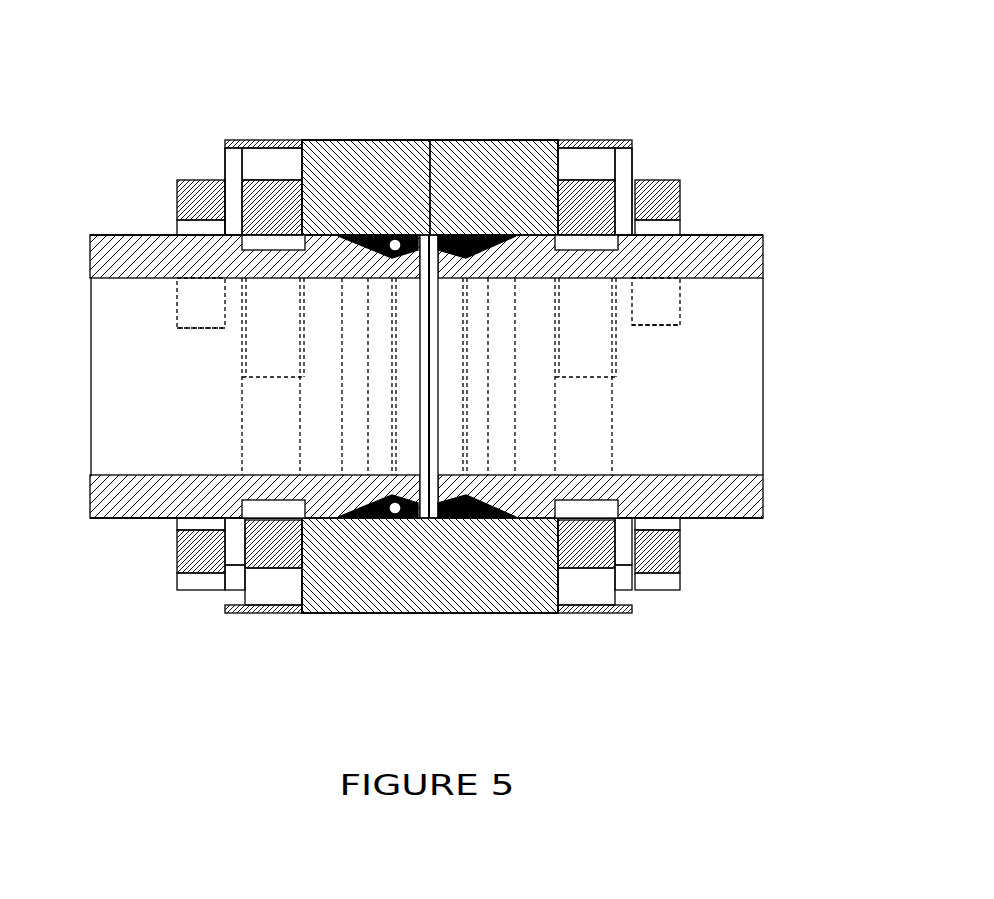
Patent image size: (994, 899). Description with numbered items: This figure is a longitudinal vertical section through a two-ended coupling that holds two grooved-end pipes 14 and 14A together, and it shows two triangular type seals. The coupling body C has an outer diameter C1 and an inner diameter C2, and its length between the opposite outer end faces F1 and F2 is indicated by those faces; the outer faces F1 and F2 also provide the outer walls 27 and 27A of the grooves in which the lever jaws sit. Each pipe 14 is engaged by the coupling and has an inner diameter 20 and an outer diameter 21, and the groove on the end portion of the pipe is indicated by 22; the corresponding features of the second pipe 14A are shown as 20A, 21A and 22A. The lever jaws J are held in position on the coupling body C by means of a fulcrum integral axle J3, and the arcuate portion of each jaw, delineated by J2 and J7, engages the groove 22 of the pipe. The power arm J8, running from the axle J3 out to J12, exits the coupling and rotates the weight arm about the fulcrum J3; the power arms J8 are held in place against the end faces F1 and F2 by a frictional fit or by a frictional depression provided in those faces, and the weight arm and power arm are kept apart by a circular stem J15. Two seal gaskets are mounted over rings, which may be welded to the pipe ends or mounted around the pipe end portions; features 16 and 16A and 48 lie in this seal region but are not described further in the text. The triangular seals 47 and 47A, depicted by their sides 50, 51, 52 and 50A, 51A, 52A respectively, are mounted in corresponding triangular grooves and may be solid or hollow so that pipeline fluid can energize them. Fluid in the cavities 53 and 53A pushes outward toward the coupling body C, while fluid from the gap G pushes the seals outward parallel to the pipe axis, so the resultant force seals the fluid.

The pipe 14 is at (125, 282).
The pipe 14A is at (763, 285).
The joint 16 is at (427, 463).
The joint portion 16A is at (463, 282).
The inner diameter of pipe 20 is at (125, 475).
The lower second plate 20A is at (770, 518).
The outer diameter of pipe 21 is at (140, 235).
The upper surface of second plate 21A is at (748, 235).
The groove 22 is at (290, 475).
The lower surface of second plate 22A is at (620, 475).
The outer wall 27 is at (198, 250).
The outer wall 27A is at (700, 262).
The triangular seal 47 is at (305, 148).
The triangular seal 47A is at (487, 617).
The clamp block edge 48 is at (335, 475).
The seal side 50 is at (332, 280).
The seal side 50A is at (493, 140).
The seal side 51 is at (410, 280).
The seal side 51A is at (528, 148).
The seal side 52 is at (410, 148).
The seal side 52A is at (477, 148).
The cavity 53 is at (360, 280).
The cavity 53A is at (485, 262).
The coupling body C is at (335, 148).
The outer diameter of coupling body C1 is at (372, 148).
The inner diameter of coupling body C2 is at (320, 565).
The outer face F1 is at (225, 152).
The outer face F2 is at (640, 158).
The gap G is at (430, 403).
The lever jaw J is at (262, 148).
The lever end J2 is at (270, 375).
The fulcrum integral axle J3 is at (410, 595).
The lever jaw point J7 is at (258, 262).
The power arm J8 is at (190, 195).
The power arm end J12 is at (190, 305).
The circular stem J15 is at (232, 578).